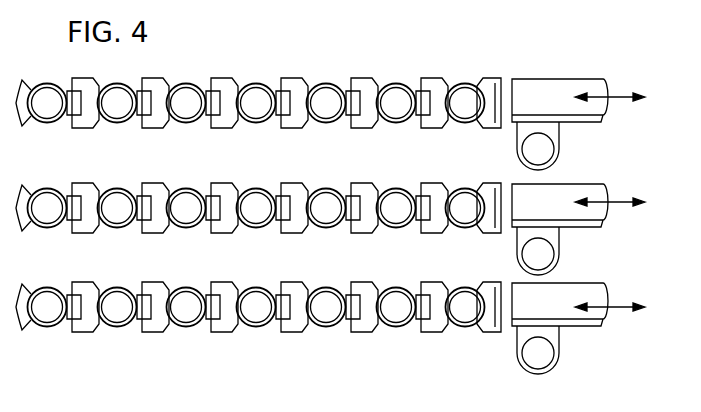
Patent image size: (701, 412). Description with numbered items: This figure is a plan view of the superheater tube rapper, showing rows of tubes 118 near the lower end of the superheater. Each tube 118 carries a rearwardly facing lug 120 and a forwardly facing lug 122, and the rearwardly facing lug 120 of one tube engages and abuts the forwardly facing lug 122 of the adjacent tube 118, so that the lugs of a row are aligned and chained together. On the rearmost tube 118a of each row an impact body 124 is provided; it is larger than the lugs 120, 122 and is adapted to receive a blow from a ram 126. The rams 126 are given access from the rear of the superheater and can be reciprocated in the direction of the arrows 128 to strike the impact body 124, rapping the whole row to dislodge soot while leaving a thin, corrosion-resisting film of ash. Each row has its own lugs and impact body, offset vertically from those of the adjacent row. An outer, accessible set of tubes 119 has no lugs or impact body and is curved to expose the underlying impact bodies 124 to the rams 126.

The tube 118 is at (257, 83).
The rearmost tube 118a is at (473, 247).
The outer set of tubes 119 is at (553, 250).
The rearwardly facing lug 120 is at (280, 213).
The forwardly facing lug 122 is at (380, 245).
The impact body 124 is at (490, 82).
The ram 126 is at (533, 85).
The arrows 128 is at (613, 100).